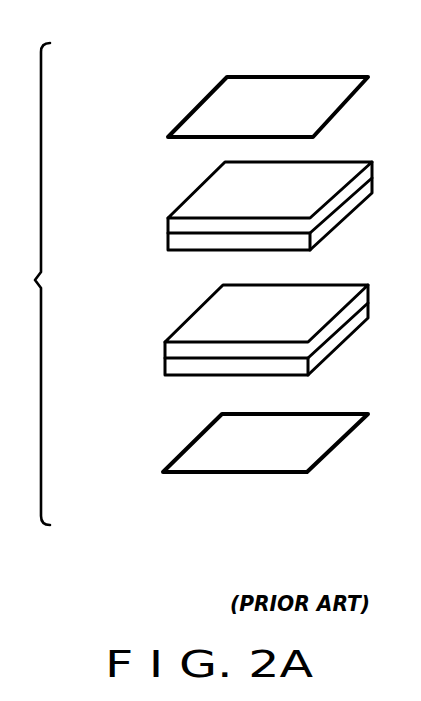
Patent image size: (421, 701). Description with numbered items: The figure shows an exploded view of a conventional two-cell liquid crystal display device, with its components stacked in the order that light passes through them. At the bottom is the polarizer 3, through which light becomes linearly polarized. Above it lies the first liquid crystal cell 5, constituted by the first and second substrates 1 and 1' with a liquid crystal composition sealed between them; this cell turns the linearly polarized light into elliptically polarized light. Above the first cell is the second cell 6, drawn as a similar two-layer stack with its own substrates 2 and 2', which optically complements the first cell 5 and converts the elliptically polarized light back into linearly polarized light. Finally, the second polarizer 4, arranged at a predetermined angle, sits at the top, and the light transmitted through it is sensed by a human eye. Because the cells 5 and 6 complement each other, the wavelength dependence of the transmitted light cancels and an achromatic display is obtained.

The first substrate 1 is at (240, 354).
The second substrate 1' is at (240, 321).
The substrate of second electrode plate 2 is at (243, 230).
The transparent conductive film on second plate 2' is at (243, 197).
The polarizer 3 is at (260, 463).
The second polarizer 4 is at (292, 89).
The liquid crystal cell 5 is at (221, 346).
The second cell 6 is at (223, 222).